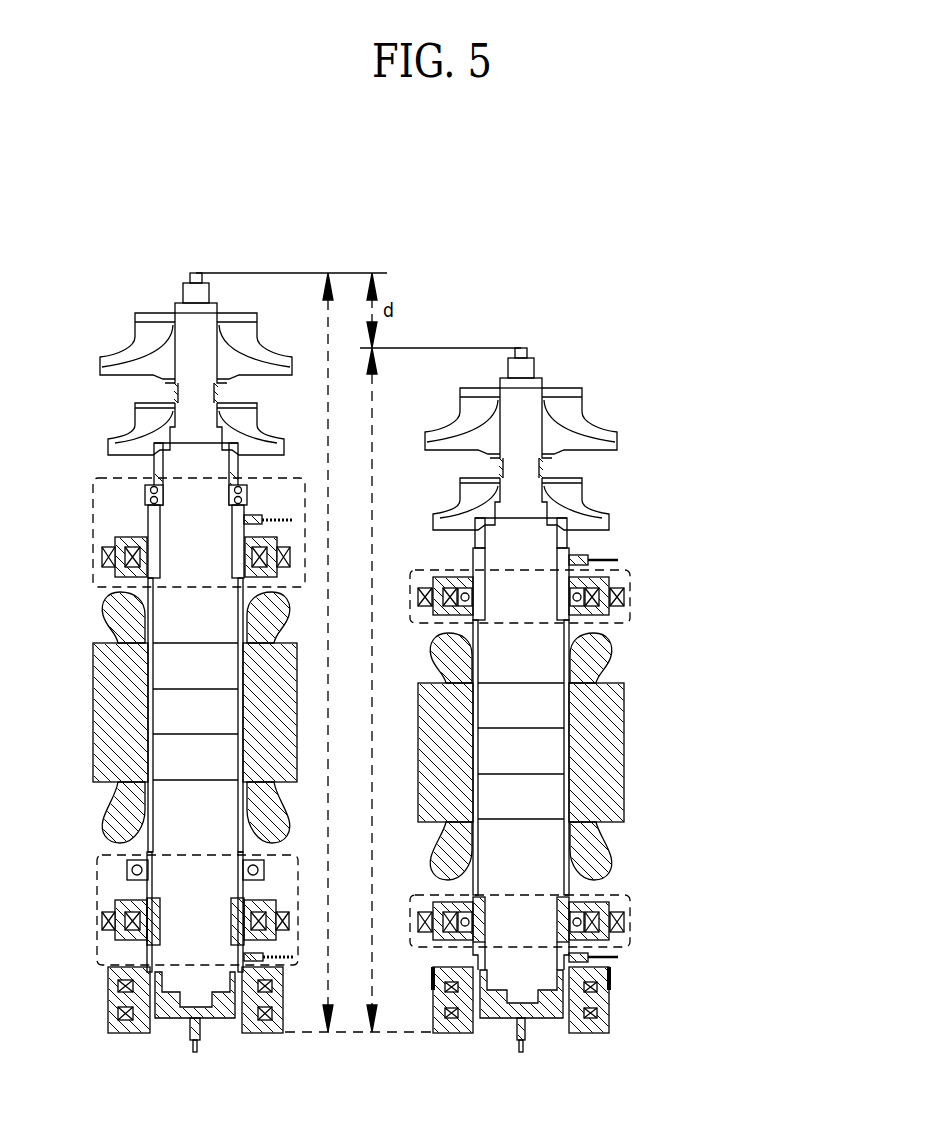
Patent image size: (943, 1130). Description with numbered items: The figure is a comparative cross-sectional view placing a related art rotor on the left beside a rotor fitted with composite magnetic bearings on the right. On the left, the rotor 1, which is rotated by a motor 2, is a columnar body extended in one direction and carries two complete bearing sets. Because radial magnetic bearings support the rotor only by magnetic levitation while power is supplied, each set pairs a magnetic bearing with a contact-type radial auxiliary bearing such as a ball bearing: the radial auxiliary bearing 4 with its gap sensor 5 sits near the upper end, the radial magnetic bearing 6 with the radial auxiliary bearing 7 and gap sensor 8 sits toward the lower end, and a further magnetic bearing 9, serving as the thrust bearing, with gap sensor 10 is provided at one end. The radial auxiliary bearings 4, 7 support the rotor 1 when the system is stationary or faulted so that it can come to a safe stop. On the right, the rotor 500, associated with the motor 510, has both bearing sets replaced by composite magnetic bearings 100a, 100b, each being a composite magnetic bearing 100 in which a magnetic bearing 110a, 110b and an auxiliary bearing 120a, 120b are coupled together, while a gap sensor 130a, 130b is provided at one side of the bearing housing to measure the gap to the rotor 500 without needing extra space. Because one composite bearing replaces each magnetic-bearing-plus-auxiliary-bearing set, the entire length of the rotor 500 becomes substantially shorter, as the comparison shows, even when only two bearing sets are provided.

The rotor 1 is at (177, 450).
The motor 2 is at (96, 664).
The radial auxiliary bearing 4 is at (145, 498).
The gap sensor 5 is at (244, 520).
The radial magnetic bearing 6 is at (115, 906).
The radial auxiliary bearing 7 is at (127, 870).
The gap sensor 8 is at (290, 963).
The magnetic bearing 9 is at (108, 975).
The gap sensor 10 is at (201, 1040).
The composite magnetic bearing 100 is at (611, 700).
The composite magnetic bearing 100a is at (572, 579).
The magnetic bearing 110a is at (570, 608).
The auxiliary bearing 120a is at (605, 578).
The gap sensor 130a is at (590, 555).
The composite magnetic bearing 100b is at (591, 923).
The magnetic bearing 110b is at (600, 905).
The auxiliary bearing 120b is at (578, 932).
The gap sensor 130b is at (631, 975).
The rotor 500 is at (527, 495).
The motor 510 is at (612, 703).